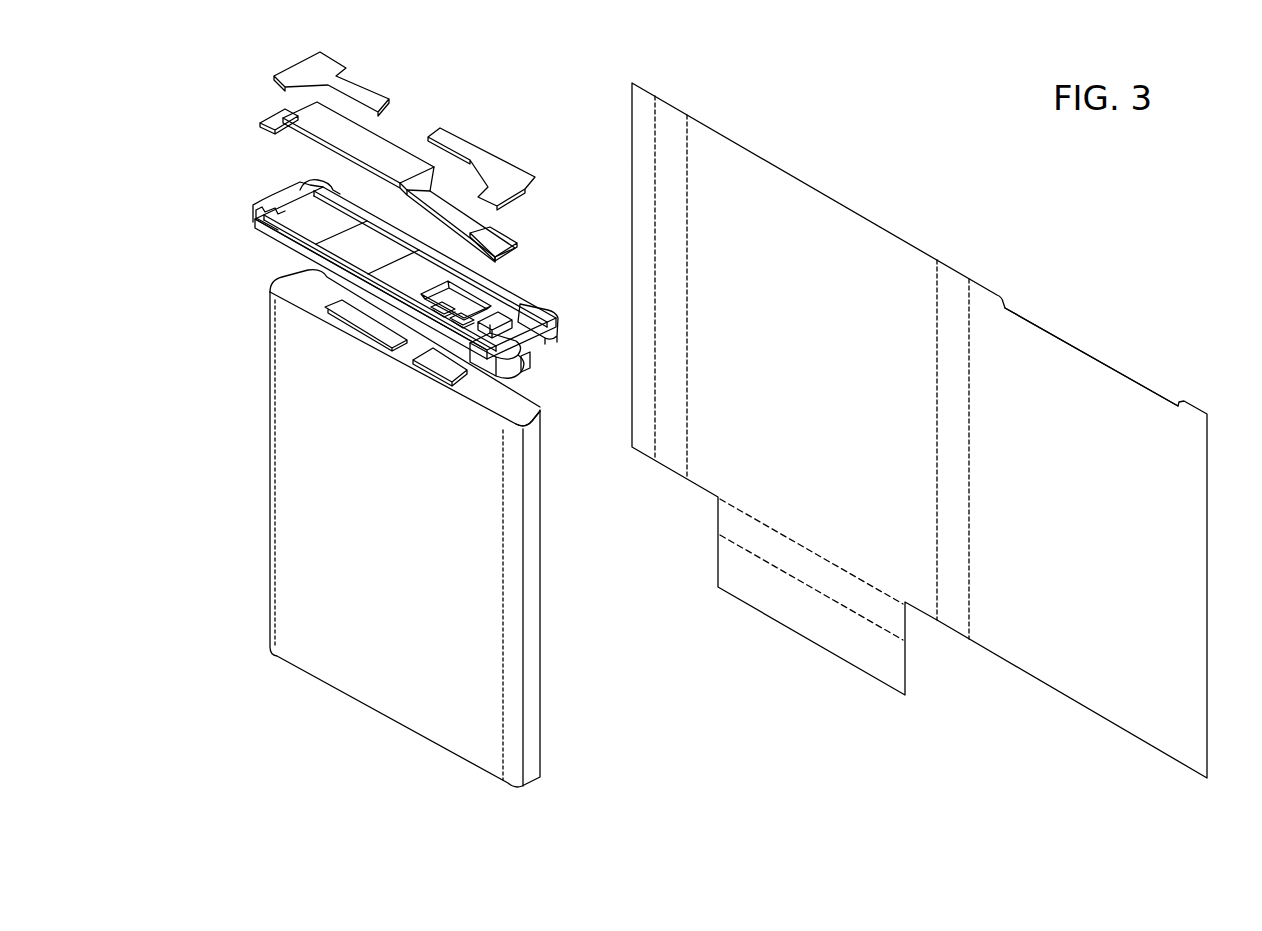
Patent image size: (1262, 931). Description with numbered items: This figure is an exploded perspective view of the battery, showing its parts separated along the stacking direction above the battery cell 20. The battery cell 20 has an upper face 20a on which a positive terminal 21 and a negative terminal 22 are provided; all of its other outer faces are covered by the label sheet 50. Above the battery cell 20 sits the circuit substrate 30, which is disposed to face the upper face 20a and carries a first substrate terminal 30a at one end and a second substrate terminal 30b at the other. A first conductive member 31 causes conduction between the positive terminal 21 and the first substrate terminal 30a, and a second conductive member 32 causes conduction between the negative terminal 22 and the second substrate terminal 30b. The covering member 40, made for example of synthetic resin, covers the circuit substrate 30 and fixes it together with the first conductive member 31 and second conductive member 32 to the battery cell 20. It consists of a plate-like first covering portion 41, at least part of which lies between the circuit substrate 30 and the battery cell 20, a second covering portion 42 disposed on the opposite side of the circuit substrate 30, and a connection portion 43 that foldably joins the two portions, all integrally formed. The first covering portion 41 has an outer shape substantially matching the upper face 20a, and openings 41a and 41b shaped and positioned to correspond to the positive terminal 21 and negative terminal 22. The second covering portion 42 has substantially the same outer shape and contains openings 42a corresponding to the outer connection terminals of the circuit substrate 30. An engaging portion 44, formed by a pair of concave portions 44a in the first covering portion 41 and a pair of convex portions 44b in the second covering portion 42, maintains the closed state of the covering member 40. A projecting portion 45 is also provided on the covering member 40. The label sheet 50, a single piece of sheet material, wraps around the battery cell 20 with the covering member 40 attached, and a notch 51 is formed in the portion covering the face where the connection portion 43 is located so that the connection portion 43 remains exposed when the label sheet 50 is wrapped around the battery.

The battery cell 20 is at (490, 562).
The upper face 20a is at (522, 418).
The positive terminal 21 is at (340, 307).
The negative terminal 22 is at (433, 360).
The circuit substrate 30 is at (372, 160).
The first substrate terminal 30a is at (270, 117).
The second substrate terminal 30b is at (495, 237).
The first conductive member 31 is at (331, 65).
The second conductive member 32 is at (493, 163).
The covering member 40 is at (247, 210).
The first covering portion 41 is at (546, 319).
The opening 41a is at (384, 242).
The opening 41b is at (463, 287).
The second covering portion 42 is at (535, 345).
The openings 42a is at (500, 312).
The connection portion 43 is at (480, 313).
The engaging portion 44 is at (276, 142).
The concave portions 44a is at (335, 188).
The convex portions 44b is at (268, 206).
The projecting portion 45 is at (525, 360).
The label sheet 50 is at (898, 179).
The notch 51 is at (1087, 357).